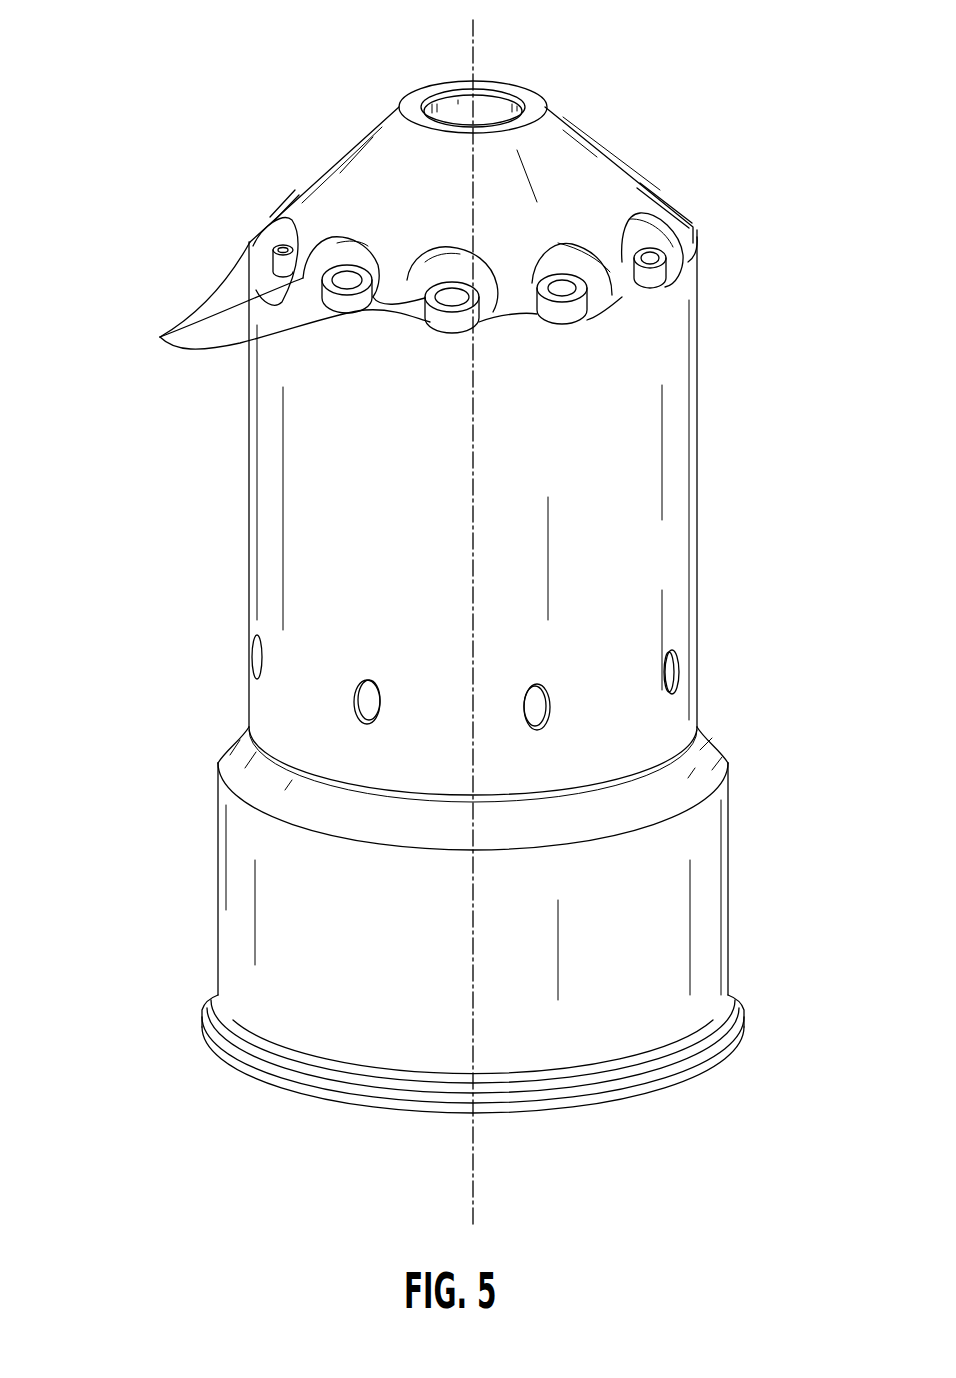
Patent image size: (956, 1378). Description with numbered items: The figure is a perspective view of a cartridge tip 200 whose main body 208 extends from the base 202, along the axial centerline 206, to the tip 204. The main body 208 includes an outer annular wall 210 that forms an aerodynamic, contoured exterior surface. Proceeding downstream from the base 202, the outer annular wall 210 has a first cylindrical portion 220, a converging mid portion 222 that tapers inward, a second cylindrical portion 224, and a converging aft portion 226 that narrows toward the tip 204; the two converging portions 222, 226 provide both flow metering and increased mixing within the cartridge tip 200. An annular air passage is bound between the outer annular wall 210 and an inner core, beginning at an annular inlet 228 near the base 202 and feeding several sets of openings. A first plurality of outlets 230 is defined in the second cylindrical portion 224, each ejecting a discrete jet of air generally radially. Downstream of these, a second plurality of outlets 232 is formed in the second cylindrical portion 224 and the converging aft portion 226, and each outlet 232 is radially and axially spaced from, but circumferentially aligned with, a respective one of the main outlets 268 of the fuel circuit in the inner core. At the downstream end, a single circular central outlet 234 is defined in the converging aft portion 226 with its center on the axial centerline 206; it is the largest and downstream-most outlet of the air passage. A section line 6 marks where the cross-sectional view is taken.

The cartridge tip 200 is at (81, 127).
The base 202 is at (733, 1047).
The tip 204 is at (532, 98).
The axial centerline 206 is at (472, 458).
The main body 208 is at (615, 430).
The outer annular wall 210 is at (275, 487).
The first cylindrical portion 220 is at (218, 898).
The converging mid portion 222 is at (233, 737).
The second cylindrical portion 224 is at (693, 518).
The converging aft portion 226 is at (617, 163).
The annular inlet 228 is at (570, 1123).
The first plurality of outlets 230 is at (553, 711).
The second plurality of outlets 232 is at (371, 299).
The central outlet 234 is at (430, 97).
The main outlets 268 is at (577, 298).
The line 6- 6 is at (473, 20).